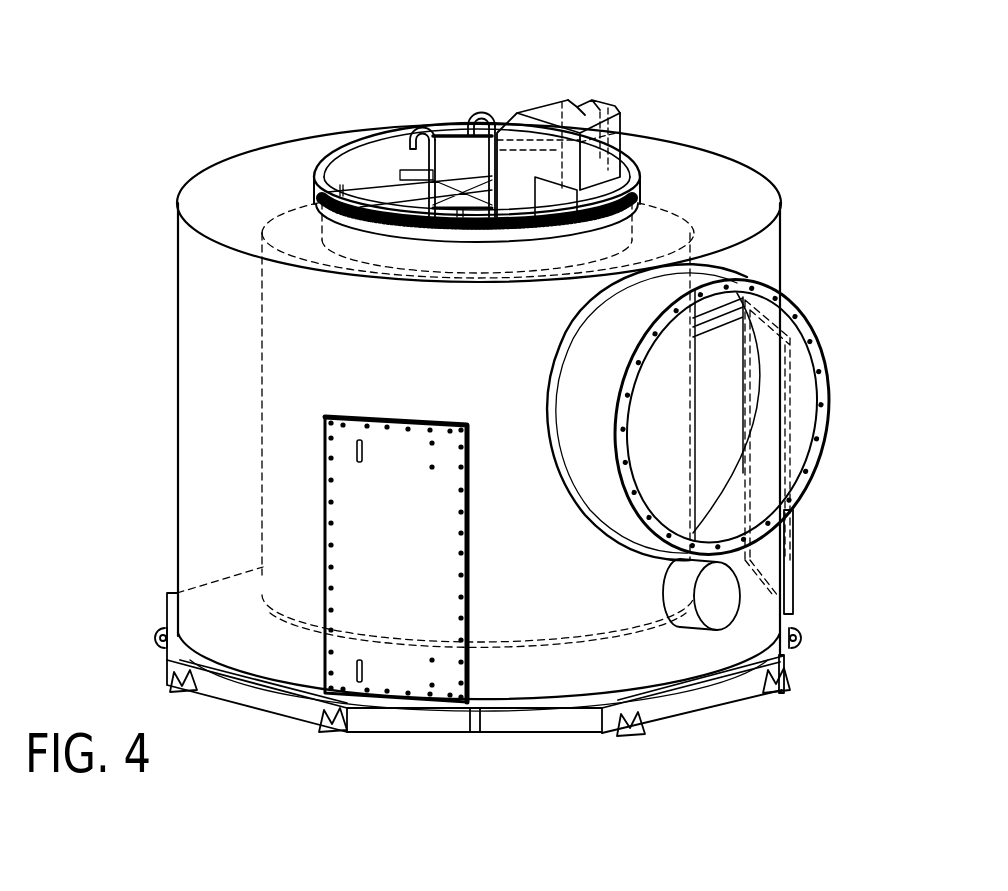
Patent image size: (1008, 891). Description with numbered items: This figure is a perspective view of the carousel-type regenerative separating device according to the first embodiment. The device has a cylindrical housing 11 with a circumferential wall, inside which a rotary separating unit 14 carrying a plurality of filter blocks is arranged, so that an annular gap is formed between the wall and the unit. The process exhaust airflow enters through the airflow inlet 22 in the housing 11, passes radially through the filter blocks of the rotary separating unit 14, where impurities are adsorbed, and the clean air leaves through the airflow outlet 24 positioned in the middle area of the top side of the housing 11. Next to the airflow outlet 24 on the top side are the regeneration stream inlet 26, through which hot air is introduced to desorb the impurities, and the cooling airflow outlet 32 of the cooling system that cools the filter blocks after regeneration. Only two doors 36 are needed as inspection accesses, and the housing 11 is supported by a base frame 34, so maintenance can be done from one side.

The cylindrical housing 11 is at (178, 288).
The rotary separating unit 14 is at (250, 355).
The airflow inlet 22 is at (818, 322).
The airflow outlet 24 is at (357, 147).
The regeneration stream inlet 26 is at (594, 101).
The cooling airflow outlet 32 is at (553, 113).
The base frame 34 is at (240, 688).
The door 36 is at (790, 580).